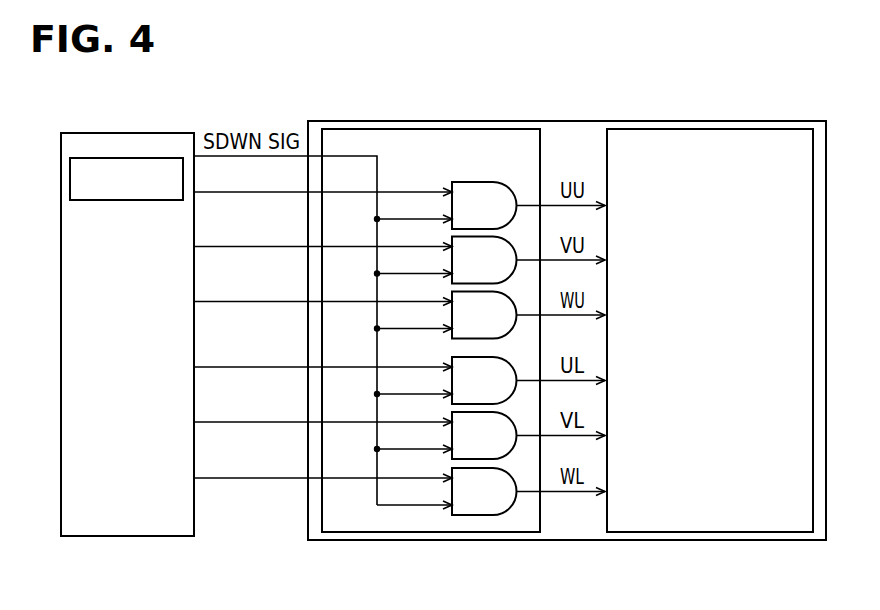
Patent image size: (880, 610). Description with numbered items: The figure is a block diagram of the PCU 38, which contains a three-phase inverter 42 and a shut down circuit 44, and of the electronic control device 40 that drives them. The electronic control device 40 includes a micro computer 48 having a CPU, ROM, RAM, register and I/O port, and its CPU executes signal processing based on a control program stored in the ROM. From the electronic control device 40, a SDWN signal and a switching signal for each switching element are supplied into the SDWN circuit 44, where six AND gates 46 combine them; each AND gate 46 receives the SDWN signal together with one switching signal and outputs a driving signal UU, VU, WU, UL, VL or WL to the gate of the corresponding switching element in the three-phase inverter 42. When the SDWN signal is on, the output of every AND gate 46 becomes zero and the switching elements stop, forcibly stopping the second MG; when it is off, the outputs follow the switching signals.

The PCU 38 is at (815, 121).
The electronic control device 40 is at (193, 132).
The three-phase inverter 42 is at (684, 129).
The shut down circuit 44 is at (497, 129).
The AND gates 46 is at (476, 531).
The micro computer 48 is at (103, 158).